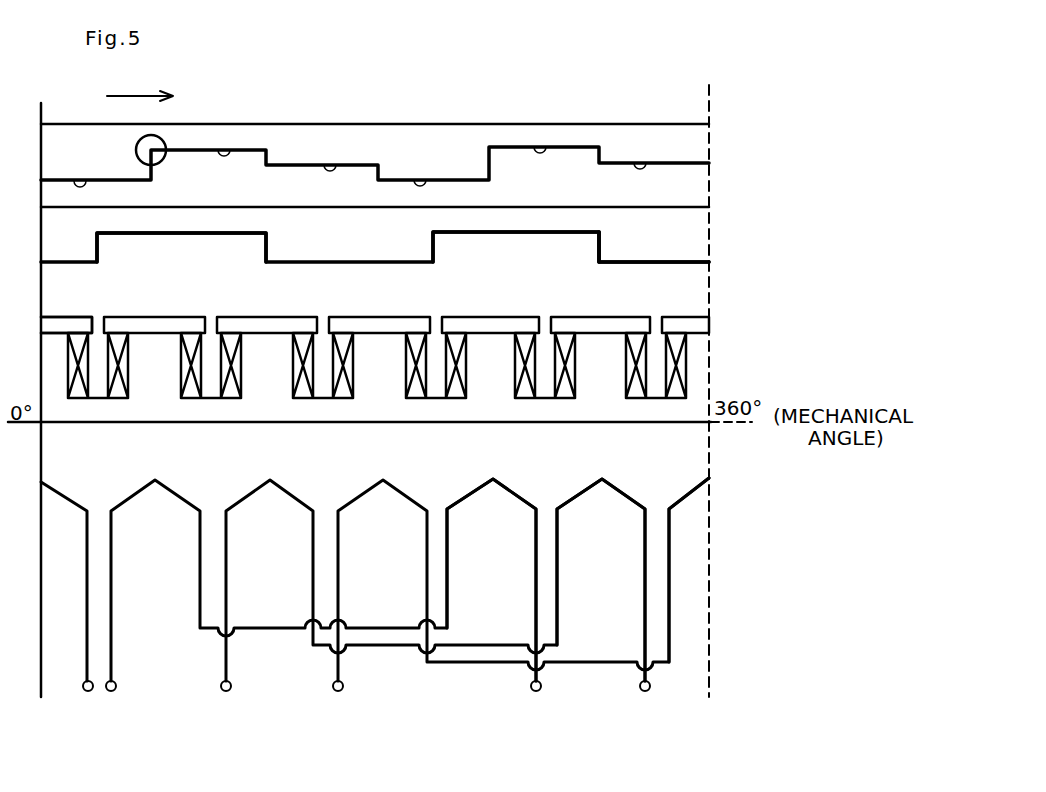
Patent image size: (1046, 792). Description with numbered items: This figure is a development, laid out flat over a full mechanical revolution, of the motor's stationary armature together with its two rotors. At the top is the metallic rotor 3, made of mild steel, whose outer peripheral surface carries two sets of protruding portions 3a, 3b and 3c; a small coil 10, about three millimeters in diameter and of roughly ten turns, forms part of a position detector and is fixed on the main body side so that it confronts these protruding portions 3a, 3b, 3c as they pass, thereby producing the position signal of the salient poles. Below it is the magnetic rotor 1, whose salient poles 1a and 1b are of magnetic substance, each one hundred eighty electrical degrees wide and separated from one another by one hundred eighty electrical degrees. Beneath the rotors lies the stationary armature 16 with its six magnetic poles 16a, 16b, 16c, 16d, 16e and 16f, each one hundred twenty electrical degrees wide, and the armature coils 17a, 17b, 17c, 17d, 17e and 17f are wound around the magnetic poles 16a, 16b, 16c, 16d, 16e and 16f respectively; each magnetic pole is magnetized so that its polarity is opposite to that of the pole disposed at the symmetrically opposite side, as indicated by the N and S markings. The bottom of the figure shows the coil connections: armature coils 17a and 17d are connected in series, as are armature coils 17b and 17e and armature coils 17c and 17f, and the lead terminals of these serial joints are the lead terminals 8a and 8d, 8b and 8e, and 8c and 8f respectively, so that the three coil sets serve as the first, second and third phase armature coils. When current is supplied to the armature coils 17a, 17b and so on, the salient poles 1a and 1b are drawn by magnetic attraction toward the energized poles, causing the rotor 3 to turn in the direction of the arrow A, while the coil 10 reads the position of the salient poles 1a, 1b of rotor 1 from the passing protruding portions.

The magnetic rotor 1 is at (688, 227).
The salient pole 1a is at (76, 262).
The salient pole 1b is at (412, 262).
The metallic rotor 3 is at (690, 140).
The protruding portion 3a is at (76, 181).
The protruding portion 3b is at (336, 165).
The protruding portion 3c is at (230, 150).
The coil 10 is at (166, 160).
The stationary armature 16 is at (700, 362).
The magnetic pole 16a is at (152, 316).
The magnetic pole 16b is at (264, 316).
The magnetic pole 16c is at (376, 316).
The magnetic pole 16d is at (488, 316).
The magnetic pole 16e is at (580, 316).
The magnetic pole 16f is at (60, 316).
The armature coil 17a is at (118, 394).
The armature coil 17b is at (231, 394).
The armature coil 17c is at (343, 394).
The armature coil 17d is at (456, 394).
The armature coil 17e is at (565, 394).
The armature coil 17f is at (676, 394).
The lead terminal 8a is at (114, 692).
The lead terminal 8b is at (229, 692).
The lead terminal 8c is at (341, 692).
The lead terminal 8d is at (539, 692).
The lead terminal 8e is at (648, 692).
The lead terminal 8f is at (86, 692).
The arrow A is at (138, 94).